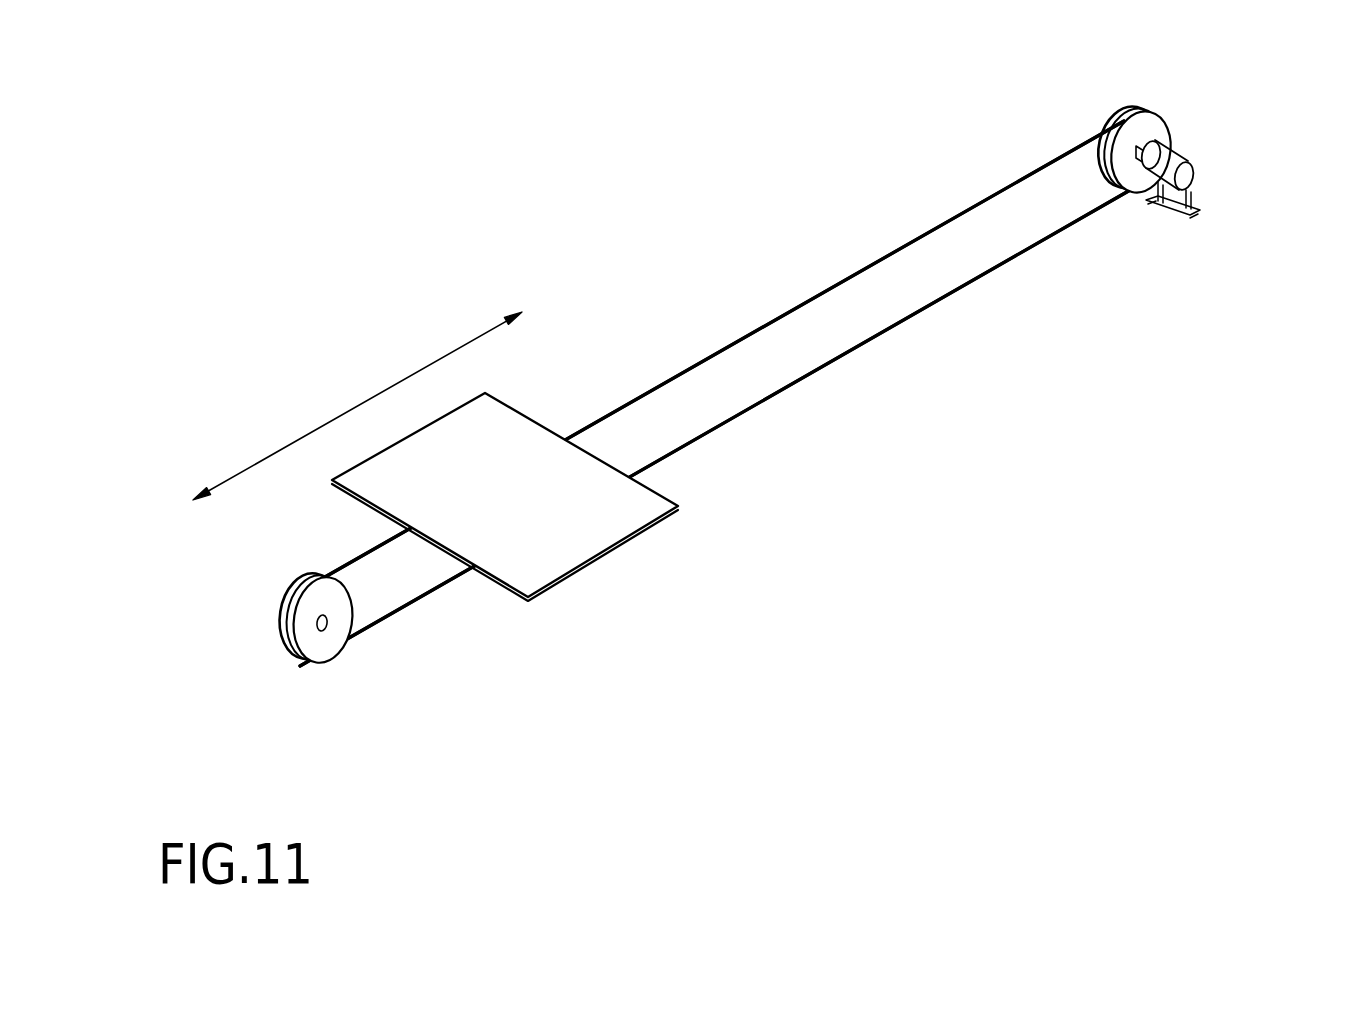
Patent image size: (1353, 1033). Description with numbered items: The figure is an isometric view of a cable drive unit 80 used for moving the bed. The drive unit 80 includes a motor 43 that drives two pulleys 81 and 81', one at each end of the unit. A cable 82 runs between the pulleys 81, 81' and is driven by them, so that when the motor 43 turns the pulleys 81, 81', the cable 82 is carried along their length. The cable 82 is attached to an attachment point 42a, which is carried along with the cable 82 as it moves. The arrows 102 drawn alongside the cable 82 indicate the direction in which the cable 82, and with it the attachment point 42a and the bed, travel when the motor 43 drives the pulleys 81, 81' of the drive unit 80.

The drive unit 80 is at (1072, 97).
The pulley 81 is at (262, 598).
The pulley 81' is at (1041, 150).
The cable 82 is at (682, 388).
The motor 43 is at (1190, 174).
The attachment point 42a is at (592, 527).
The arrows 102 is at (383, 392).